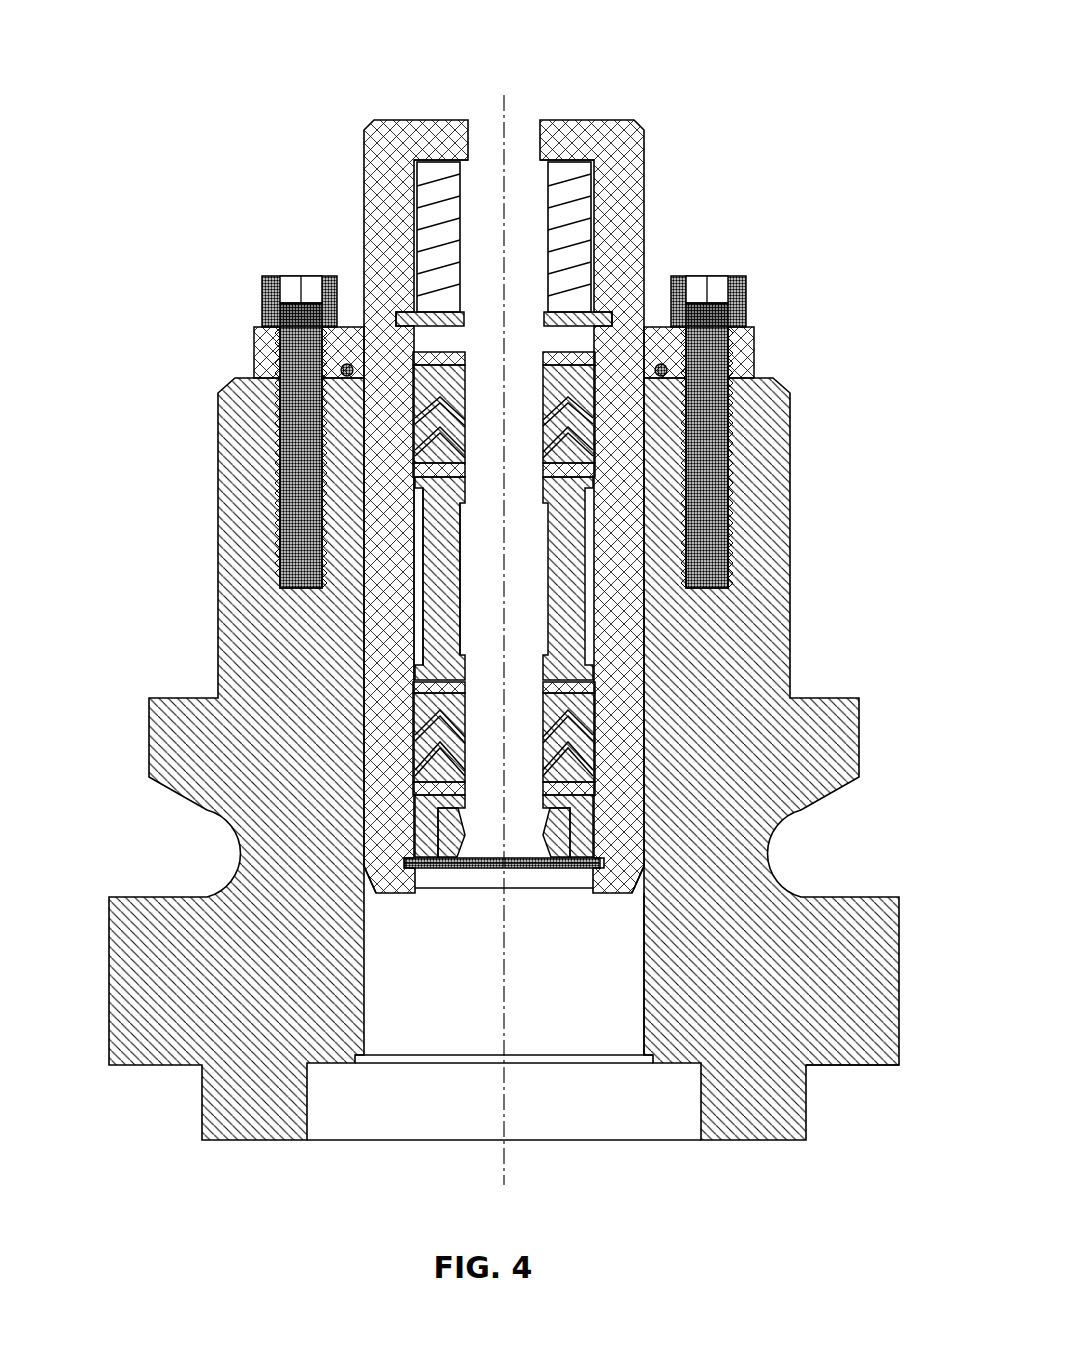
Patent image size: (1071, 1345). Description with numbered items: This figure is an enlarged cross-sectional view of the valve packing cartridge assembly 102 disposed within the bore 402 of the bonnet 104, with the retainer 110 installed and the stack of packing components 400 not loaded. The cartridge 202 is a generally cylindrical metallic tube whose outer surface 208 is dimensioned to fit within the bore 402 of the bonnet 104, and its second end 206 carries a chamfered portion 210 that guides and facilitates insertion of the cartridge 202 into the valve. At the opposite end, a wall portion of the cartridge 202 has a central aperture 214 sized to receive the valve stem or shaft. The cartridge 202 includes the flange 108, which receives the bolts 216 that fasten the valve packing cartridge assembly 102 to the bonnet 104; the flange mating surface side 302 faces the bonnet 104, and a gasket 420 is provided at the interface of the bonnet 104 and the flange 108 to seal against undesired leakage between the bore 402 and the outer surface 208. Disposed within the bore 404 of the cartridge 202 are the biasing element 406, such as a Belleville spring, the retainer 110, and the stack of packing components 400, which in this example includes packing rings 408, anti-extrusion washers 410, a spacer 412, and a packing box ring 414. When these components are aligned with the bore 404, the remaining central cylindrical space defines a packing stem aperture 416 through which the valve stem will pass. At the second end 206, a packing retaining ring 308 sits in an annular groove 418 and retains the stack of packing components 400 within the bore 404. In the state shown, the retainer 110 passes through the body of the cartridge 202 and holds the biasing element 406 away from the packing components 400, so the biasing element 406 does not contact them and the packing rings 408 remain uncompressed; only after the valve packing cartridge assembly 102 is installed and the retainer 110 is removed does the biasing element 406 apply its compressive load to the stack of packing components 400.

The valve packing cartridge assembly 102 is at (605, 100).
The bonnet 104 is at (830, 1066).
The flange 108 is at (755, 352).
The retainer 110 is at (400, 312).
The cartridge 202 is at (392, 622).
The second end 206 is at (413, 870).
The outer surface 208 is at (643, 627).
The chamfered portion 210 is at (372, 876).
The central aperture 214 is at (542, 120).
The bolts 216 is at (746, 283).
The flange mating surface side 302 is at (667, 372).
The packing retaining ring 308 is at (458, 868).
The stack of packing components 400 is at (423, 518).
The bore 402 is at (640, 970).
The bore 404 is at (323, 350).
The biasing element 406 is at (593, 233).
The packing rings 408 is at (590, 393).
The anti-extrusion washers 410 is at (592, 478).
The spacer 412 is at (590, 520).
The packing box ring 414 is at (603, 863).
The packing stem aperture 416 is at (460, 555).
The annular groove 418 is at (600, 866).
The gasket 420 is at (683, 357).